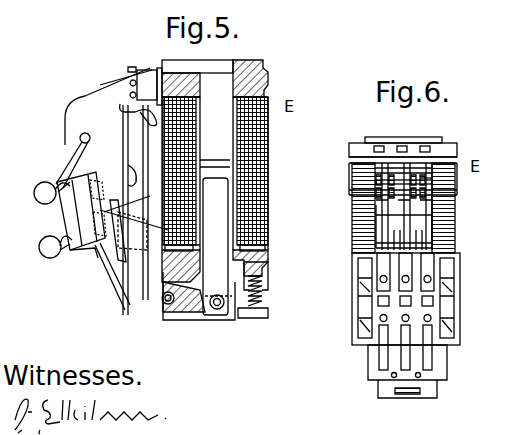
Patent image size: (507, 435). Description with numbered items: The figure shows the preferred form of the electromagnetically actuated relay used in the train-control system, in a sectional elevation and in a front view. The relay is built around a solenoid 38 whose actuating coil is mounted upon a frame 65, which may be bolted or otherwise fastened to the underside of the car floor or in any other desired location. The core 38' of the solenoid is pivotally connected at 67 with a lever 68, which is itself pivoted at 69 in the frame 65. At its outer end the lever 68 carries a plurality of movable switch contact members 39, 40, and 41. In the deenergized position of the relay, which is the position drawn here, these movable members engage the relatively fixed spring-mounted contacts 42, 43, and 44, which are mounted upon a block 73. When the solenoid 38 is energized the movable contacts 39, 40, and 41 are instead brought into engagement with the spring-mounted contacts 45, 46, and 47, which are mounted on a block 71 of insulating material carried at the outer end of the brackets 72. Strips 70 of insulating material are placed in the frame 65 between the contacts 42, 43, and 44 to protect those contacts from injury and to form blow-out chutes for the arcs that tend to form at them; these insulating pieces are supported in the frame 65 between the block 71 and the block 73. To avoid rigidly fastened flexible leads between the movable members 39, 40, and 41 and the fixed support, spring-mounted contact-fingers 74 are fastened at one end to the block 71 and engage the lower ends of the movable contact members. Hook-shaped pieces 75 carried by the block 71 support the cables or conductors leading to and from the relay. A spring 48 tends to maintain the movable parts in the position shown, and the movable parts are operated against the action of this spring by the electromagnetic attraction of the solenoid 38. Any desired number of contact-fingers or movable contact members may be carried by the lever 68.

In FIG. 5, the solenoid 38 is at (265, 174).
In FIG. 6, the solenoid 38 is at (463, 208).
In FIG. 5, the core 38' is at (248, 237).
In FIG. 5, the movable switch contact member 39 is at (135, 178).
In FIG. 6, the movable switch contact member 39 is at (440, 213).
In FIG. 6, the movable switch contact member 40 is at (378, 215).
In FIG. 6, the movable switch contact member 41 is at (380, 205).
In FIG. 6, the spring-mounted contact 42 is at (352, 190).
In FIG. 6, the spring-mounted contact 43 is at (376, 176).
In FIG. 5, the spring-mounted contact 44 is at (112, 108).
In FIG. 6, the spring-mounted contact 44 is at (457, 193).
In FIG. 6, the spring-mounted contact 45 is at (378, 232).
In FIG. 6, the spring-mounted contact 46 is at (385, 243).
In FIG. 5, the spring-mounted contact 47 is at (80, 138).
In FIG. 6, the spring-mounted contact 47 is at (445, 240).
In FIG. 5, the spring 48 is at (264, 292).
In FIG. 5, the frame 65 is at (262, 66).
In FIG. 6, the frame 65 is at (436, 139).
In FIG. 5, the pivotal connection 67 is at (217, 312).
In FIG. 5, the lever 68 is at (190, 305).
In FIG. 5, the pivot 69 is at (168, 305).
In FIG. 5, the strips of insulating material 70 is at (80, 105).
In FIG. 6, the strips of insulating material 70 is at (432, 168).
In FIG. 5, the block of insulating material 71 is at (78, 252).
In FIG. 5, the brackets 72 is at (104, 212).
In FIG. 5, the block 73 is at (148, 76).
In FIG. 5, the spring-mounted contact-fingers 74 is at (122, 300).
In FIG. 5, the hook-shaped pieces 75 is at (45, 245).